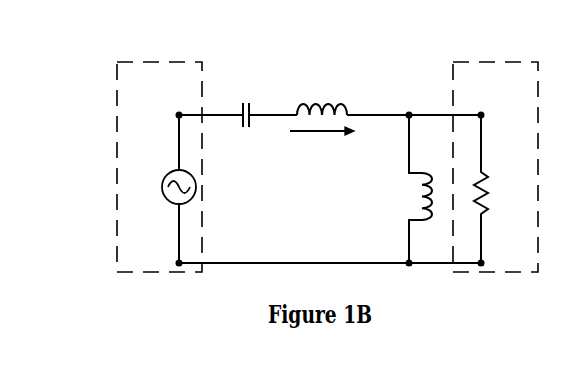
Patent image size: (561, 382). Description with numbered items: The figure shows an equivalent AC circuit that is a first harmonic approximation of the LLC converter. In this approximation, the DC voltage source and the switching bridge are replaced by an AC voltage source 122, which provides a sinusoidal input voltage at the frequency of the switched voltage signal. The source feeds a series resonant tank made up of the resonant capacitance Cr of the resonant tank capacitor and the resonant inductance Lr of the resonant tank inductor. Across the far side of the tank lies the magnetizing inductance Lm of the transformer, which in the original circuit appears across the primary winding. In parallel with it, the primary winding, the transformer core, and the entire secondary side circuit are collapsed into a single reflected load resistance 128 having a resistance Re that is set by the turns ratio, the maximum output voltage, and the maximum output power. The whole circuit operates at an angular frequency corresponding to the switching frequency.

The AC voltage source 122 is at (146, 94).
The reflected load resistance 128 is at (482, 94).
The resonant capacitance Cr is at (247, 101).
The resonant inductance Lr is at (322, 95).
The magnetizing inductance Lm is at (422, 189).
The reflected load resistance value Re is at (491, 189).